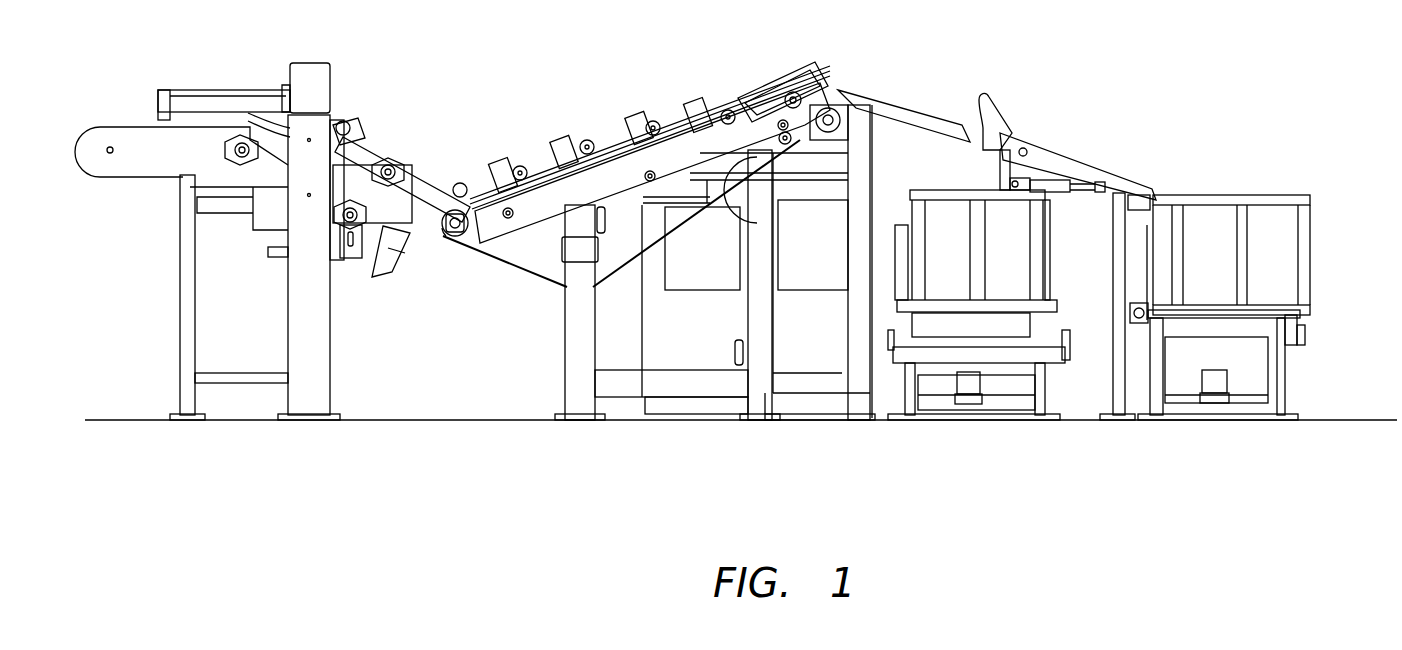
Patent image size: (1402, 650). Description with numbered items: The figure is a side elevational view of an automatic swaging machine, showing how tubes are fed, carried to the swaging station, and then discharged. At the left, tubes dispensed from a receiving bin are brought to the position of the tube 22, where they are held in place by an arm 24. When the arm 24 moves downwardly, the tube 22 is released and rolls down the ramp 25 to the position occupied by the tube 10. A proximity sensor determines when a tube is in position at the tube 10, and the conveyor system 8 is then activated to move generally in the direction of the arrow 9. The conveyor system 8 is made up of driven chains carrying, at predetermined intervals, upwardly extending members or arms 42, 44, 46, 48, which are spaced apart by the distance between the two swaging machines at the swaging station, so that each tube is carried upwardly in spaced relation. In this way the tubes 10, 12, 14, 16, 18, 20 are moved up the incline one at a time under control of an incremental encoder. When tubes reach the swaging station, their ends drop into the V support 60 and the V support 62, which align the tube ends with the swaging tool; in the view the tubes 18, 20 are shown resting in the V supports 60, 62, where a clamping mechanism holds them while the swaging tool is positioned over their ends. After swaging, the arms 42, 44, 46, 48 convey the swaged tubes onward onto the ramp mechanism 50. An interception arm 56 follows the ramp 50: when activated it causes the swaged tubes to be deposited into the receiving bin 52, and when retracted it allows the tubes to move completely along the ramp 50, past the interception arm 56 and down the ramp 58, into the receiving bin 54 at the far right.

The conveyor system 8 is at (498, 277).
The arrow 9 is at (650, 276).
The tube 10 is at (461, 184).
The tube 12 is at (526, 166).
The tube 14 is at (591, 140).
The tube 16 is at (658, 121).
The tube 18 is at (793, 92).
The tube 20 is at (830, 108).
The tube 22 is at (346, 121).
The arm 24 is at (357, 124).
The ramp 25 is at (393, 165).
The upwardly extending arm 42 is at (500, 167).
The upwardly extending arm 44 is at (566, 147).
The upwardly extending arm 46 is at (640, 121).
The upwardly extending arm 48 is at (702, 100).
The ramp mechanism 50 is at (905, 108).
The receiving bin 52 is at (958, 190).
The receiving bin 54 is at (1225, 195).
The interception arm 56 is at (992, 99).
The ramp 58 is at (1080, 160).
The V support 60 is at (727, 124).
The V support 62 is at (787, 144).